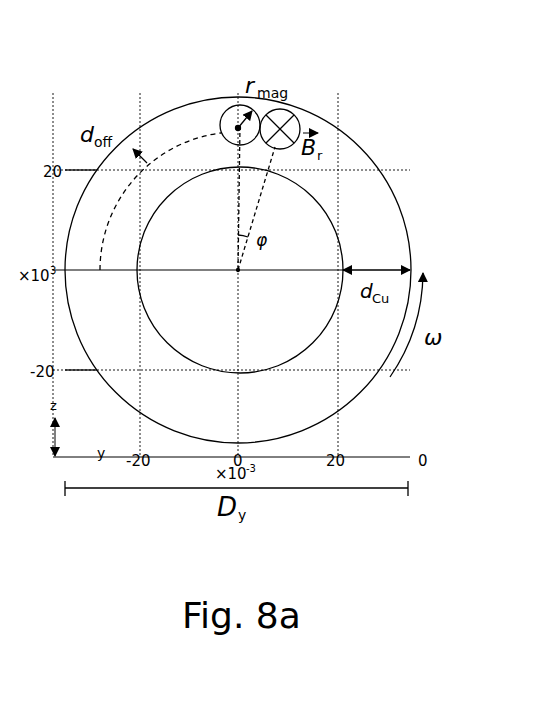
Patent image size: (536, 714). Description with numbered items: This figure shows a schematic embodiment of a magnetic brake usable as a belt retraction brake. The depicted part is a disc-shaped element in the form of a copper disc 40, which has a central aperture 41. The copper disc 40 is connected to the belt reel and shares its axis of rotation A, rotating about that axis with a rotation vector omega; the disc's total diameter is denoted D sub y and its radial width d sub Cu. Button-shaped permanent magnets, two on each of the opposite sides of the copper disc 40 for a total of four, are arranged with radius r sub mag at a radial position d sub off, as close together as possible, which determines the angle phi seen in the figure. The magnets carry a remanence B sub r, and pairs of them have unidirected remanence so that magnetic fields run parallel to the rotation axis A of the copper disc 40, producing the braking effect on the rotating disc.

The copper disc 40 is at (405, 233).
The aperture 41 is at (240, 270).
The axis of rotation A is at (235, 273).